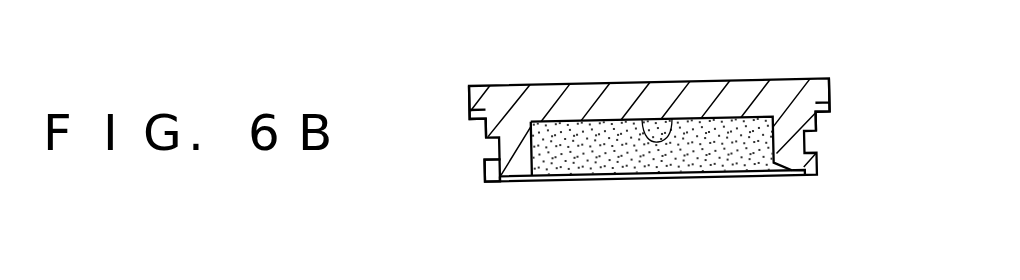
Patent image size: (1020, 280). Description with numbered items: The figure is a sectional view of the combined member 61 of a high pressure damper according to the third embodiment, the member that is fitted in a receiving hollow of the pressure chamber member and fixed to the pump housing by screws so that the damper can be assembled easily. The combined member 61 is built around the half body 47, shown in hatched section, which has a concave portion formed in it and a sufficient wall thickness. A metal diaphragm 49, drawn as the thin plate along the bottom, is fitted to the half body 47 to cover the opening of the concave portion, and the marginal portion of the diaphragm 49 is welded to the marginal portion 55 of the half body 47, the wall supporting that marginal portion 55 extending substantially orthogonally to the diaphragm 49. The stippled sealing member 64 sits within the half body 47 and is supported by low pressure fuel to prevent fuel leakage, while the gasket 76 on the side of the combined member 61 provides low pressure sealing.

The half body 47 is at (745, 88).
The diaphragm 49 is at (685, 179).
The marginal portion 55 is at (500, 179).
The combined member 61 is at (482, 86).
The sealing member 64 is at (672, 119).
The gasket 76 is at (832, 109).